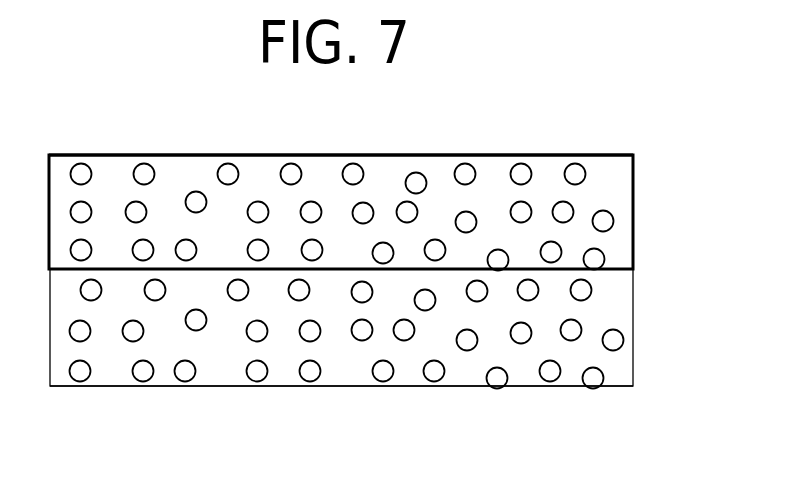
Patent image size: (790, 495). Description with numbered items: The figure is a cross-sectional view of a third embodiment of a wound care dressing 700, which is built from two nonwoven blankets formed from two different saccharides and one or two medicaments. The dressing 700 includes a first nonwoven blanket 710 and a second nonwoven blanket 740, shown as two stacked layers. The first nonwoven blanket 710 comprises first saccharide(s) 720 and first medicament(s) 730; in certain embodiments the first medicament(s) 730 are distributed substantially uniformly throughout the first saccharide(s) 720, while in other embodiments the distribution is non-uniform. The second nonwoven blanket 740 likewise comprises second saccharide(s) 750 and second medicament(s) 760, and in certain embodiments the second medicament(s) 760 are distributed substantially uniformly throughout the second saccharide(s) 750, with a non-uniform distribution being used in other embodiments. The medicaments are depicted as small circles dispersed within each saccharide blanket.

The wound care dressing 700 is at (392, 285).
The first nonwoven blanket 710 is at (392, 369).
The first saccharide(s) 720 is at (623, 378).
The first medicament(s) 730 is at (598, 382).
The second nonwoven blanket 740 is at (390, 180).
The second saccharide(s) 750 is at (618, 168).
The second medicament(s) 760 is at (522, 173).